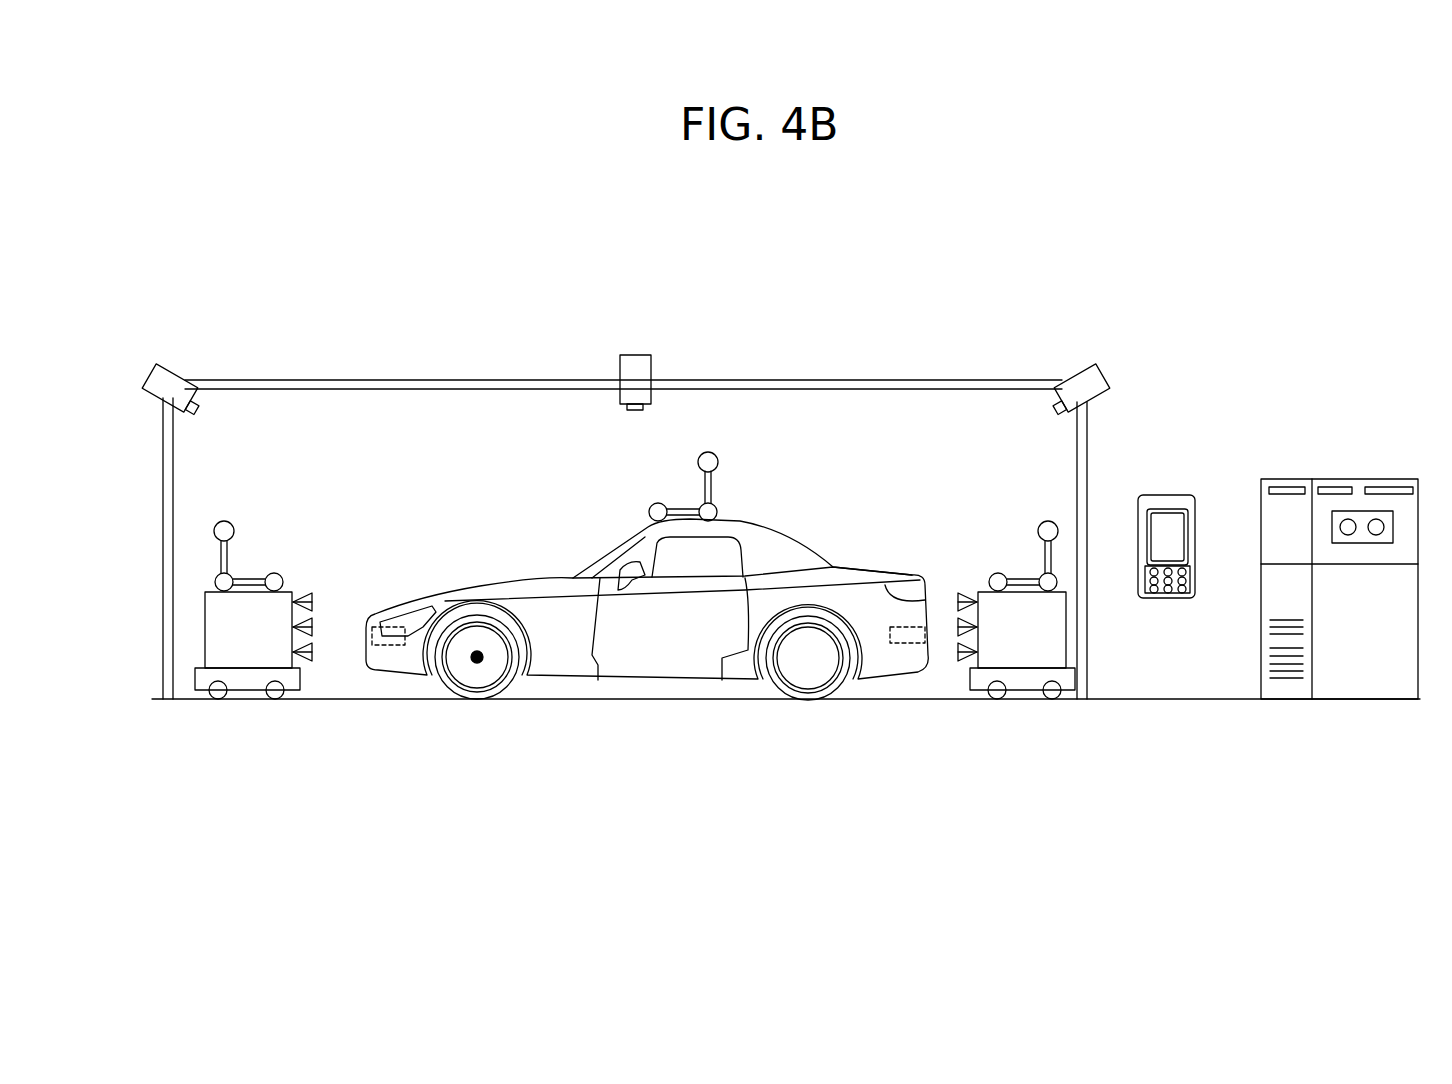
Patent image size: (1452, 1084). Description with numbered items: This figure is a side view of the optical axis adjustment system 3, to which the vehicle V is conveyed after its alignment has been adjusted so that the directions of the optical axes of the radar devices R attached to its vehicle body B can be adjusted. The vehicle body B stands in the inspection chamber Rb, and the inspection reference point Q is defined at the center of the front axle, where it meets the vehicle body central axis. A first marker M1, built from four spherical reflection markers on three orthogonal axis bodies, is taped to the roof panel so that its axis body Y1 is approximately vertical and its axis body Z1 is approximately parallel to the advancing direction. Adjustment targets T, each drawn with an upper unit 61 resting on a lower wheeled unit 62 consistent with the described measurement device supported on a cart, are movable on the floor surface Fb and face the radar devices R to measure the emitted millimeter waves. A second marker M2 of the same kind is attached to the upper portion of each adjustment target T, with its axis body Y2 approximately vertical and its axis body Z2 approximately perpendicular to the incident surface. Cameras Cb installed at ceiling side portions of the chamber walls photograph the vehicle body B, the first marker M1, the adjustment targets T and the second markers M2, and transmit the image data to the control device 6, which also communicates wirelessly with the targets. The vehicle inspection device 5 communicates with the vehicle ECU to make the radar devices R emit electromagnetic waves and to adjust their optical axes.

The optical axis adjustment system 3 is at (294, 216).
The inspection chamber Rb is at (333, 447).
The floor surface Fb is at (303, 701).
The camera Cb is at (170, 374).
The first marker M1 is at (740, 452).
The axis body Z1 is at (680, 505).
The axis body Y1 is at (716, 480).
The second marker M2 is at (193, 571).
The axis body Z2 is at (254, 578).
The axis body Y2 is at (220, 556).
The target body 61 is at (210, 627).
The carriage / base 62 is at (210, 675).
The adjustment target T is at (322, 550).
The vehicle V is at (902, 476).
The vehicle body B is at (548, 590).
The radar device R is at (384, 653).
The inspection reference point Q is at (478, 663).
The vehicle inspection device 5 is at (1172, 498).
The control device 6 is at (1375, 479).